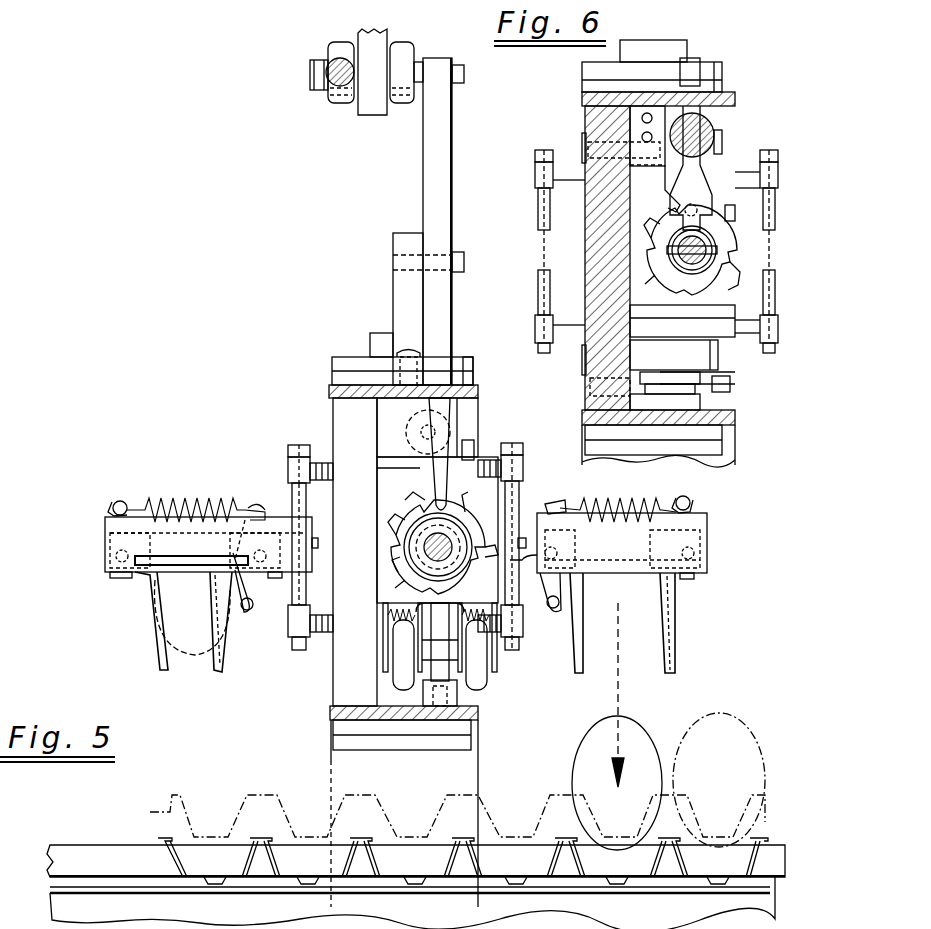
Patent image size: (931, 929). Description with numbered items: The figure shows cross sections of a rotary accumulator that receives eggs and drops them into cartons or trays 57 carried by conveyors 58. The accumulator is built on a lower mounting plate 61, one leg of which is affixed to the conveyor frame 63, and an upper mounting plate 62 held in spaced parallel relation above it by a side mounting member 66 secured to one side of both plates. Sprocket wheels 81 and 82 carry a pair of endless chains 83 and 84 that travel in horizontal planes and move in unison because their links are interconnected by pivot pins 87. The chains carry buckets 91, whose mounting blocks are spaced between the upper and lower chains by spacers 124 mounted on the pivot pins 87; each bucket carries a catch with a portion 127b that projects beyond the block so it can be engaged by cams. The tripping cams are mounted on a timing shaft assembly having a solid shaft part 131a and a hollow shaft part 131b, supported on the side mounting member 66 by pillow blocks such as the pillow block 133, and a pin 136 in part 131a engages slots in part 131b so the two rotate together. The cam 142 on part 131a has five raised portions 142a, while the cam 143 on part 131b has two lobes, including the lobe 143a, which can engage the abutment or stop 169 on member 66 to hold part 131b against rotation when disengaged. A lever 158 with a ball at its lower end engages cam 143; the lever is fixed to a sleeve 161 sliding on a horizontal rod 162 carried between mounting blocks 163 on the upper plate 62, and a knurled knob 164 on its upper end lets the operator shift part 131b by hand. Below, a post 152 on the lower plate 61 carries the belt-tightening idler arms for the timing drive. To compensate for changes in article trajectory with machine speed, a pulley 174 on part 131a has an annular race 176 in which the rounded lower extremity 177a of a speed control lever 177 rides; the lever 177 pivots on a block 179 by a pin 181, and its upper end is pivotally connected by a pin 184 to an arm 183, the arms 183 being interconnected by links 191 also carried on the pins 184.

In FIG. 5, the cartons or trays 57 is at (170, 812).
In FIG. 5, the conveyors 58 is at (78, 832).
In FIG. 5, the lower mounting plate 61 is at (335, 776).
In FIG. 6, the lower mounting plate 61 is at (735, 418).
In FIG. 5, the upper mounting plate 62 is at (330, 392).
In FIG. 6, the upper mounting plate 62 is at (730, 99).
In FIG. 5, the conveyor frame 63 is at (246, 912).
In FIG. 5, the side mounting member 66 is at (345, 683).
In FIG. 6, the side mounting member 66 is at (600, 253).
In FIG. 5, the sprocket wheel 81 is at (478, 470).
In FIG. 5, the sprocket wheel 82 is at (333, 635).
In FIG. 5, the endless chain 83 is at (292, 446).
In FIG. 5, the endless chain 84 is at (282, 660).
In FIG. 5, the pivot pins 87 is at (286, 503).
In FIG. 5, the buckets 91 is at (186, 488).
In FIG. 5, the spacers 124 is at (292, 585).
In FIG. 5, the catch portion 127b is at (318, 543).
In FIG. 5, the solid shaft part 131a is at (410, 520).
In FIG. 6, the solid shaft part 131a is at (645, 286).
In FIG. 6, the hollow shaft part 131b is at (663, 225).
In FIG. 5, the pillow block 133 is at (419, 534).
In FIG. 6, the pillow block 133 is at (711, 262).
In FIG. 6, the pin 136 is at (706, 246).
In FIG. 5, the cam 142 is at (470, 518).
In FIG. 5, the raised portions 142a is at (531, 550).
In FIG. 6, the cam 143 is at (700, 289).
In FIG. 6, the lobe 143a is at (742, 272).
In FIG. 5, the post 152 is at (457, 695).
In FIG. 6, the lever 158 is at (700, 190).
In FIG. 6, the sleeve 161 is at (722, 150).
In FIG. 6, the horizontal rod 162 is at (700, 128).
In FIG. 5, the mounting blocks 163 is at (452, 412).
In FIG. 6, the mounting blocks 163 is at (668, 110).
In FIG. 6, the knurled knob 164 is at (692, 66).
In FIG. 6, the abutment or stop 169 is at (655, 196).
In FIG. 5, the pulley 174 is at (430, 556).
In FIG. 5, the annular race 176 is at (416, 547).
In FIG. 5, the speed control lever 177 is at (423, 165).
In FIG. 5, the rounded lower extremity 177a is at (449, 500).
In FIG. 5, the block 179 is at (408, 285).
In FIG. 5, the pin 181 is at (464, 262).
In FIG. 5, the arm 183 is at (372, 106).
In FIG. 5, the pin 184 is at (464, 74).
In FIG. 5, the links 191 is at (330, 88).